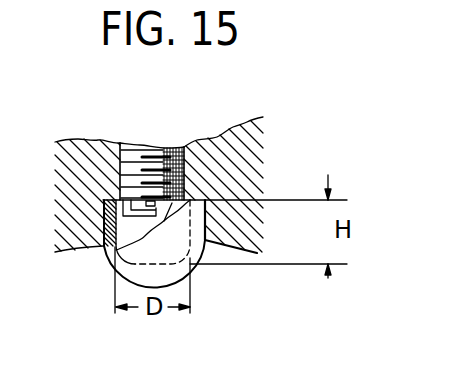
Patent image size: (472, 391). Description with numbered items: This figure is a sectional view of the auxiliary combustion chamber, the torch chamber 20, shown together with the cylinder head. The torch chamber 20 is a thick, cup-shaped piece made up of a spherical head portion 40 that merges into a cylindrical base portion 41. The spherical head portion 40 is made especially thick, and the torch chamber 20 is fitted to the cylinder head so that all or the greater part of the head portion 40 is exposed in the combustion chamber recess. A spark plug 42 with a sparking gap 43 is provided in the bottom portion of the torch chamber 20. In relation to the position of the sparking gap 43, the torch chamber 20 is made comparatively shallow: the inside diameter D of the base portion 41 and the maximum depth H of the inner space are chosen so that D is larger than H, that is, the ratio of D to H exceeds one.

The torch chamber 20 is at (132, 264).
The spherical head portion 40 is at (197, 261).
The cylindrical base portion 41 is at (207, 222).
The spark plug 42 is at (177, 147).
The sparking gap 43 is at (133, 193).